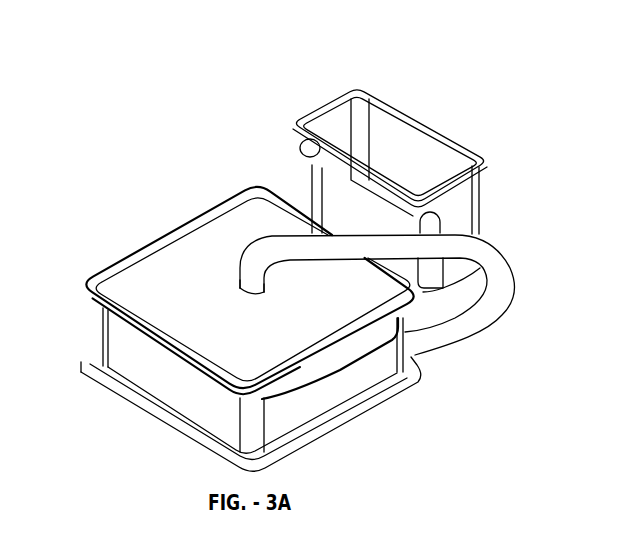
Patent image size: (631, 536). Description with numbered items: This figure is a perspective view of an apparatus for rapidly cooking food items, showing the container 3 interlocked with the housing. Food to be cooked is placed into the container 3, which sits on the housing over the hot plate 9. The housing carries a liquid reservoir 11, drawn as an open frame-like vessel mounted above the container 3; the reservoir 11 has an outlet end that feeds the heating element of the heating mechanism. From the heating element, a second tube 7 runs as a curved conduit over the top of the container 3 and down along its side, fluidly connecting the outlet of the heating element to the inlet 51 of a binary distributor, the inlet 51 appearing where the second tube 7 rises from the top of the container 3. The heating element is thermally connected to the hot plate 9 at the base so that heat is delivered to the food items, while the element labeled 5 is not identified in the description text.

The container 3 is at (287, 410).
The lid 5 is at (197, 280).
The second tube 7 is at (490, 291).
The hot plate 9 is at (147, 407).
The liquid reservoir 11 is at (337, 152).
The inlet of binary distributor 51 is at (230, 297).